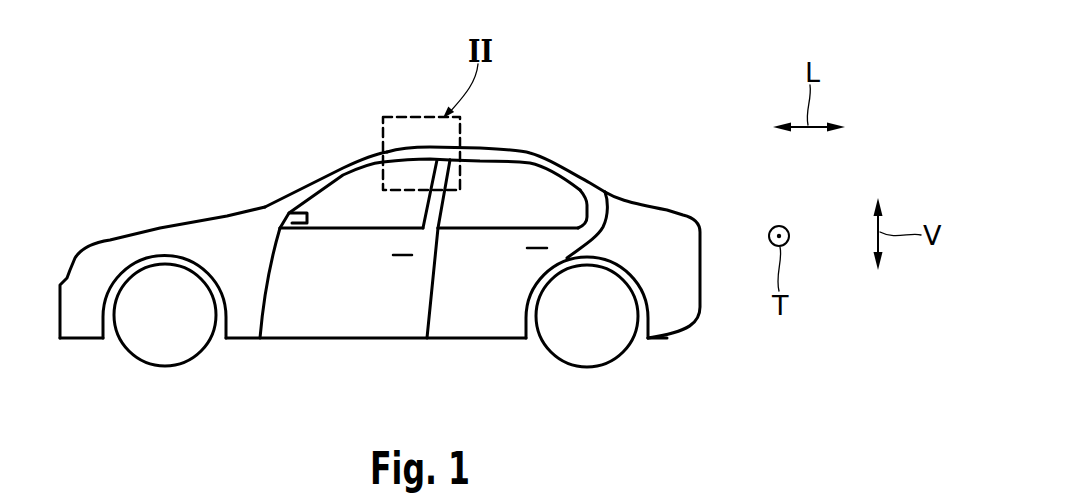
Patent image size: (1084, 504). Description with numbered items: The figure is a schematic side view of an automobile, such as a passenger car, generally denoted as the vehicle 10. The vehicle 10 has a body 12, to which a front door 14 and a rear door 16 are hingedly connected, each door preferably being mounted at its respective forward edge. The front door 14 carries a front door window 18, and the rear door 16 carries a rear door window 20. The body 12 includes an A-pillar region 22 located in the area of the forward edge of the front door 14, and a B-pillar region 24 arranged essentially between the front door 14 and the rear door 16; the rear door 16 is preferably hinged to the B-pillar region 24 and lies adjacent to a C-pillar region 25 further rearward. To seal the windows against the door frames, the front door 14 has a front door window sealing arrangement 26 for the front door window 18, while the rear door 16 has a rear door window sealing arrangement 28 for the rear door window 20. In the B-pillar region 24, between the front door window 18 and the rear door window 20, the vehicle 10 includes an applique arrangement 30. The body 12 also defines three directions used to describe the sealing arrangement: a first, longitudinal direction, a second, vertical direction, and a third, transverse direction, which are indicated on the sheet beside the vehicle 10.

The vehicle 10 is at (672, 110).
The body 12 is at (268, 220).
The front door 14 is at (303, 323).
The rear door 16 is at (455, 323).
The front door window 18 is at (352, 200).
The rear door window 20 is at (535, 185).
The A-pillar region 22 is at (303, 170).
The B-pillar region 24 is at (450, 207).
The C-pillar region 25 is at (562, 172).
The front door window sealing arrangement 26 is at (360, 165).
The rear door window sealing arrangement 28 is at (583, 180).
The applique arrangement 30 is at (435, 215).